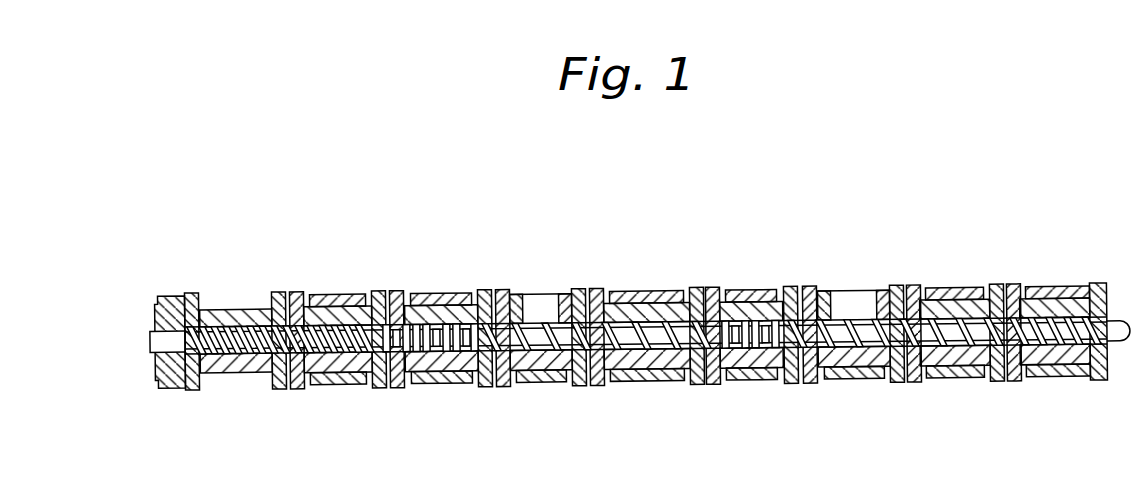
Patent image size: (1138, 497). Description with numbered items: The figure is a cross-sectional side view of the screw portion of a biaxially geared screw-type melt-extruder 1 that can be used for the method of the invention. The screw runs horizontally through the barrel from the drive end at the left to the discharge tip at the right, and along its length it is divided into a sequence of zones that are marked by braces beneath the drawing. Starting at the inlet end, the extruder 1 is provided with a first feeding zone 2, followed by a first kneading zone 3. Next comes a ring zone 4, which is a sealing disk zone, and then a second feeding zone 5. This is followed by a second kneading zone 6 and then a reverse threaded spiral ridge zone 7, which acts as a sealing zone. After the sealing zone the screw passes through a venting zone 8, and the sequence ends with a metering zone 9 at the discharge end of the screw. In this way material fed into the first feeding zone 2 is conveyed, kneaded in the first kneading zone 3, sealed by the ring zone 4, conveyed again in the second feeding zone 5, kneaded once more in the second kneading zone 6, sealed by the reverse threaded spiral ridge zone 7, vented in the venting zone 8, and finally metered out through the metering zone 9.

The biaxially geared screw-type melt-extruder 1 is at (613, 253).
The first feeding zone 2 is at (366, 404).
The first kneading zone 3 is at (376, 404).
The ring zone (sealing disk zone) 4 is at (460, 404).
The second feeding zone 5 is at (710, 404).
The second kneading zone 6 is at (715, 404).
The reverse threaded spiral ridge zone (sealing zone) 7 is at (792, 404).
The venting zone 8 is at (950, 404).
The metering zone 9 is at (957, 404).